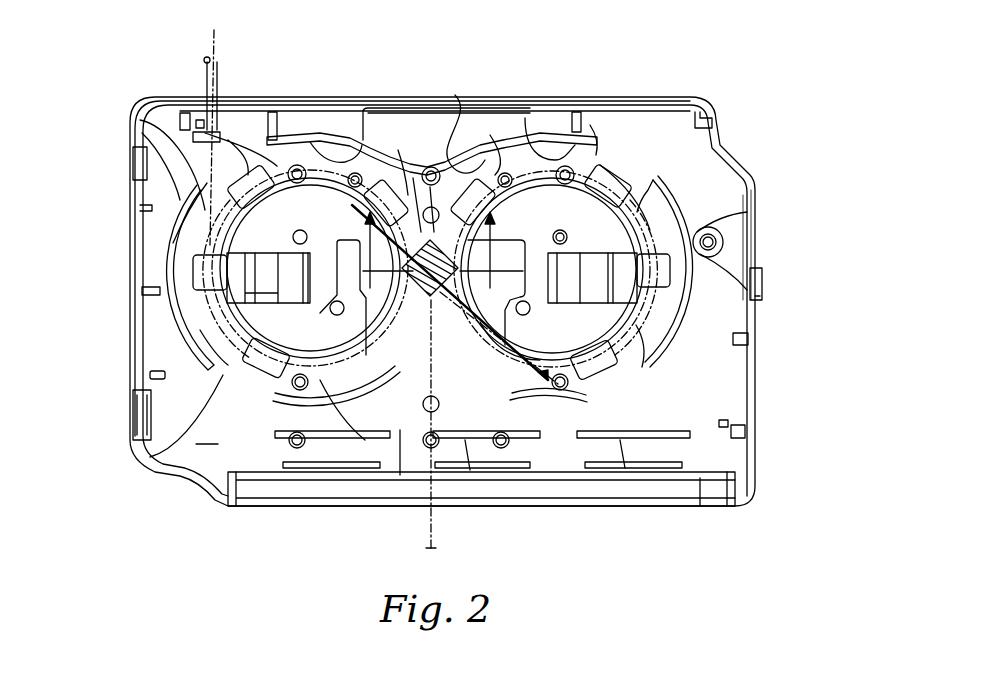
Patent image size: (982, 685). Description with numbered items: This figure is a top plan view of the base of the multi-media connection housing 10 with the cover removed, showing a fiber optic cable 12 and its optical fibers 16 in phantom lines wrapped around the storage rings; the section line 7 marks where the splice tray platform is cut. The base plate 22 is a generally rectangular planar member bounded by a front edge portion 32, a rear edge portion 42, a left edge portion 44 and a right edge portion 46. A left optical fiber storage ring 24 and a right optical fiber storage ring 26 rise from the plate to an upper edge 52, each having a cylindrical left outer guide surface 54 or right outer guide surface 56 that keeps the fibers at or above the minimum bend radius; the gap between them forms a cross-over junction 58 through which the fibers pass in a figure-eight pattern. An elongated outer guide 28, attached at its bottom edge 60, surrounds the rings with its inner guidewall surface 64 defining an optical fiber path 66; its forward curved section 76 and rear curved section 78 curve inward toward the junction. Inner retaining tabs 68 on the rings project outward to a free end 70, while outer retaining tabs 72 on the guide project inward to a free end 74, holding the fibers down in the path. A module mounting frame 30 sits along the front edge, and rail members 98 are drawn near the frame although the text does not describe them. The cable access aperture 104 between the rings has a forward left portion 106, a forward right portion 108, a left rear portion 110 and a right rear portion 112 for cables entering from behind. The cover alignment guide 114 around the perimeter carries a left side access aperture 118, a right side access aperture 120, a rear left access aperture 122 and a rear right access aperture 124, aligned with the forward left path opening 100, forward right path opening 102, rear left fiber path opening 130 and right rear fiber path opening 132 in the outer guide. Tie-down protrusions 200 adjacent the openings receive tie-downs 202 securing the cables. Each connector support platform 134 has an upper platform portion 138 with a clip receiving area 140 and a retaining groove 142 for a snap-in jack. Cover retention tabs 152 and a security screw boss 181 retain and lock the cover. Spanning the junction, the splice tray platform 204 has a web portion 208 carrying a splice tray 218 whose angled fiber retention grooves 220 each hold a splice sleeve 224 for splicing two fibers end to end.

The multi-media connection housing 10 is at (100, 188).
The fiber optic cable 12 is at (215, 126).
The optical fibers 16 is at (195, 322).
The base plate 22 is at (142, 415).
The left optical fiber storage ring 24 is at (178, 255).
The right optical fiber storage ring 26 is at (648, 225).
The outer guide 28 is at (310, 130).
The module mounting frame 30 is at (715, 505).
The front edge portion 32 is at (688, 508).
The rear edge portion 42 is at (447, 132).
The left edge portion 44 is at (143, 218).
The right edge portion 46 is at (745, 335).
The upper edge 52 is at (755, 275).
The left outer guide surface 54 is at (200, 342).
The right outer guide surface 56 is at (708, 240).
The cross-over junction 58 is at (470, 140).
The bottom edge 60 is at (535, 120).
The inner guidewall surface 64 is at (400, 150).
The optical fiber path 66 is at (280, 135).
The inner retaining tabs 68 is at (205, 210).
The free end 70 is at (180, 115).
The outer retaining tabs 72 is at (138, 160).
The free end 74 is at (355, 140).
The forward curved section 76 is at (470, 470).
The rear curved section 78 is at (407, 135).
The guide rail 98 is at (680, 432).
The forward left path opening 100 is at (140, 455).
The forward right path opening 102 is at (630, 468).
The cable access aperture 104 is at (428, 435).
The forward left portion 106 is at (340, 466).
The forward right portion 108 is at (510, 468).
The left rear portion 110 is at (340, 300).
The right rear portion 112 is at (505, 265).
The cover alignment guide 114 is at (752, 230).
The left side access aperture 118 is at (142, 290).
The right side access aperture 120 is at (740, 430).
The rear, left access aperture 122 is at (205, 130).
The rear, right access aperture 124 is at (576, 120).
The rear left fiber path opening 130 is at (250, 135).
The right rear fiber path opening 132 is at (600, 135).
The connector support platform 134 is at (640, 330).
The upper platform portion 138 is at (648, 307).
The clip receiving area 140 is at (610, 175).
The retaining groove 142 is at (566, 240).
The cover retention tabs 152 is at (760, 298).
The security screw boss 181 is at (745, 225).
The tie-down protrusion 200 is at (195, 120).
The tie-down 202 is at (225, 130).
The splice tray platform 204 is at (345, 393).
The web portion 208 is at (445, 305).
The splice tray 218 is at (505, 320).
The fiber retention grooves 220 is at (418, 200).
The splice sleeve 224 is at (400, 440).
The section line 7- 7 is at (443, 260).